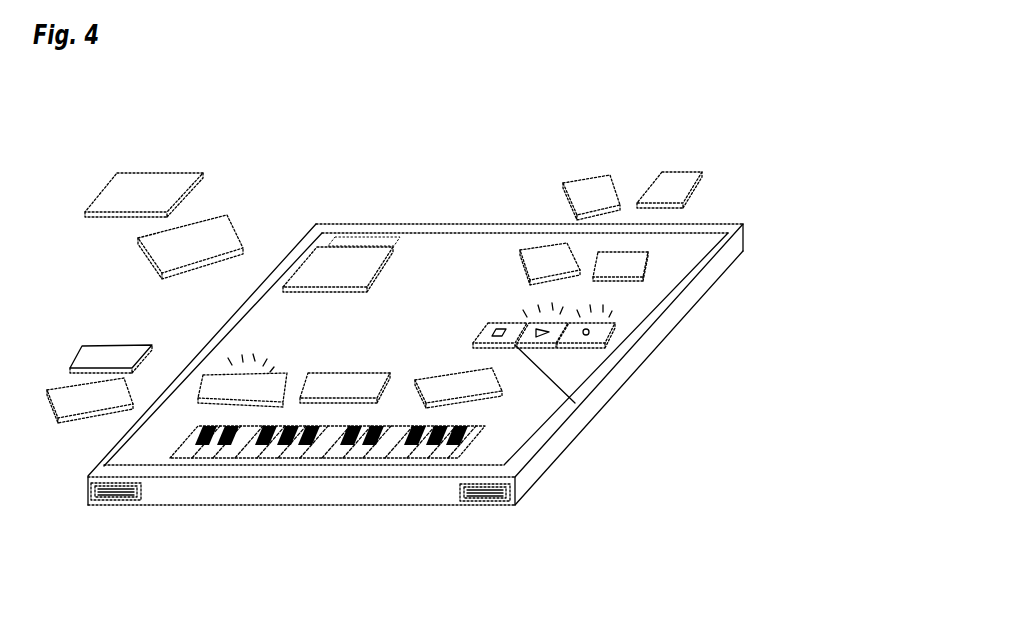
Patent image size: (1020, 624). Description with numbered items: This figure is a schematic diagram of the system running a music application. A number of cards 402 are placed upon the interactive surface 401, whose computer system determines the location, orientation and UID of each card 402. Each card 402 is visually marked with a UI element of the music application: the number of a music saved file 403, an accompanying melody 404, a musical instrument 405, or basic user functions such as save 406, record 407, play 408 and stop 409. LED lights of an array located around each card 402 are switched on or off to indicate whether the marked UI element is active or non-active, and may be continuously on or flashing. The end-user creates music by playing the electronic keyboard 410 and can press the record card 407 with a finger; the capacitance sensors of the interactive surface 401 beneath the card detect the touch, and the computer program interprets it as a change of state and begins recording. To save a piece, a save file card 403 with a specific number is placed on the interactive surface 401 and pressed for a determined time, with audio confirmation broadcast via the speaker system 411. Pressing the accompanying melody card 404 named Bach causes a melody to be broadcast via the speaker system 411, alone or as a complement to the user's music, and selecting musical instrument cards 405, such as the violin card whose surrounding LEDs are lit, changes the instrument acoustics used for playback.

The interactive surface 401 is at (717, 220).
The cards 402 is at (453, 373).
The save file card 403 is at (200, 176).
The accompanying melody card 404 is at (657, 178).
The musical instrument card 405 is at (416, 380).
The save card 406 is at (647, 262).
The record card 407 is at (610, 342).
The play card 408 is at (567, 352).
The stop card 409 is at (590, 413).
The electronic keyboard 410 is at (473, 443).
The speaker system 411 is at (98, 503).